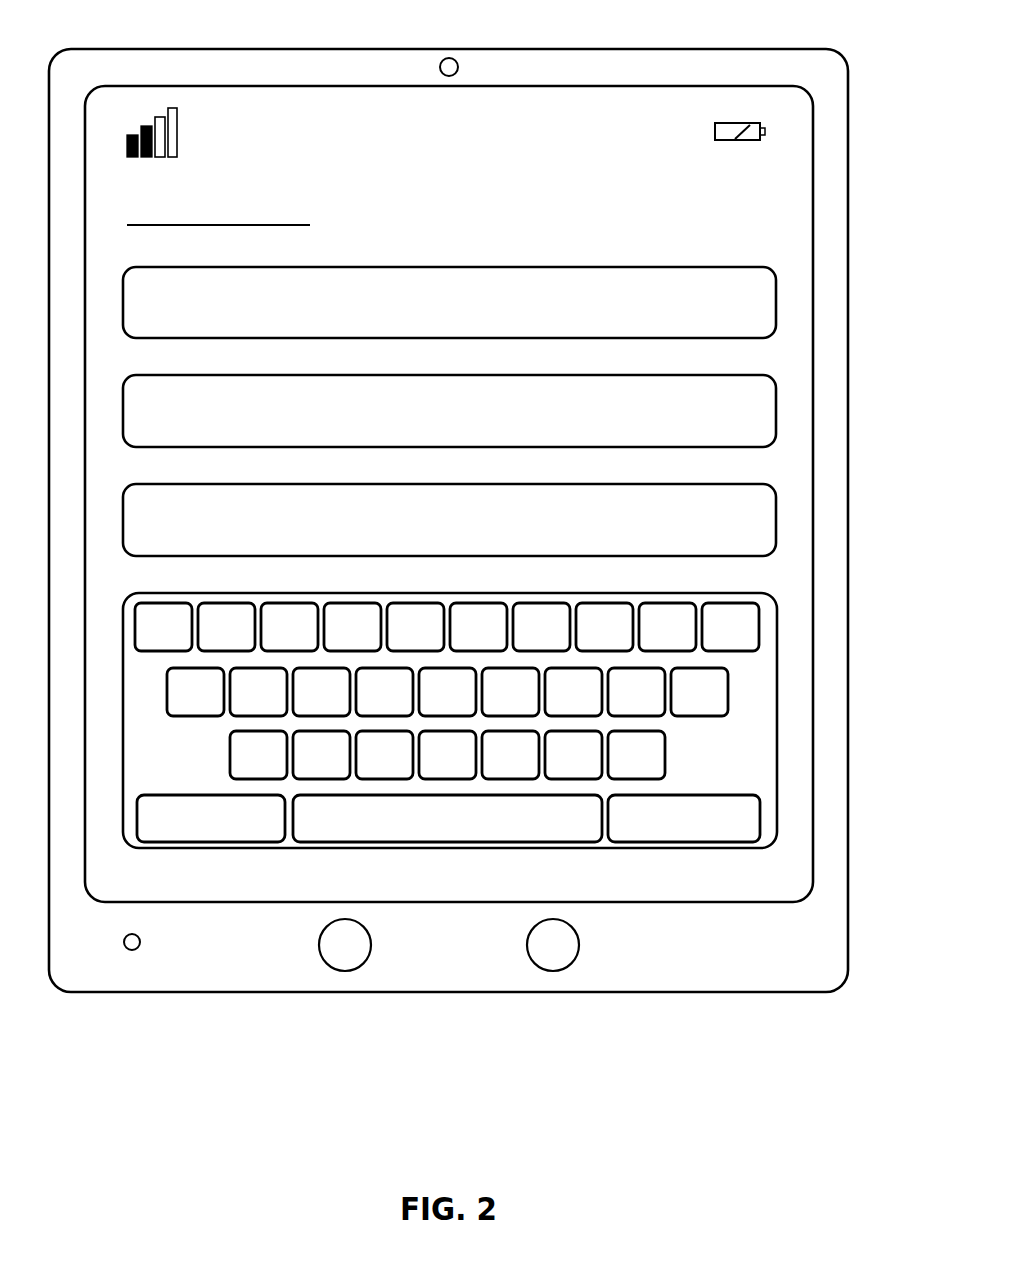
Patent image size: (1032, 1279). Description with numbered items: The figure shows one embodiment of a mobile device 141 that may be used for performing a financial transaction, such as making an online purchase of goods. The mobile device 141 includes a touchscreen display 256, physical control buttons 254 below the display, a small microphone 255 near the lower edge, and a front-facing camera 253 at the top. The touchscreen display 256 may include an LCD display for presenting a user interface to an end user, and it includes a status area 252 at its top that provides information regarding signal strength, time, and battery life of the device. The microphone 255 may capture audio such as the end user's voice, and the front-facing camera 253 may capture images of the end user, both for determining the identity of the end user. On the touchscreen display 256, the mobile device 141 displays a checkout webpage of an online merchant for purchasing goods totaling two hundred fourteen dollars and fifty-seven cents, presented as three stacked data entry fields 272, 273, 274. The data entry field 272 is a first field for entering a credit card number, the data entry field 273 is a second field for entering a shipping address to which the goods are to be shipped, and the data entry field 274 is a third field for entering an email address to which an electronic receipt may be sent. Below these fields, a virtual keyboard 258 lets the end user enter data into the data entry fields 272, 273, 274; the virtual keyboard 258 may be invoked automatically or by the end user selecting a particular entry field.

The mobile device 141 is at (547, 1077).
The status area 252 is at (858, 107).
The front-facing camera 253 is at (447, 57).
The physical control buttons 254 is at (858, 918).
The microphone 255 is at (142, 938).
The touchscreen display 256 is at (794, 881).
The virtual keyboard 258 is at (760, 603).
The data entry field 272 is at (730, 316).
The data entry field 273 is at (730, 424).
The data entry field 274 is at (730, 533).